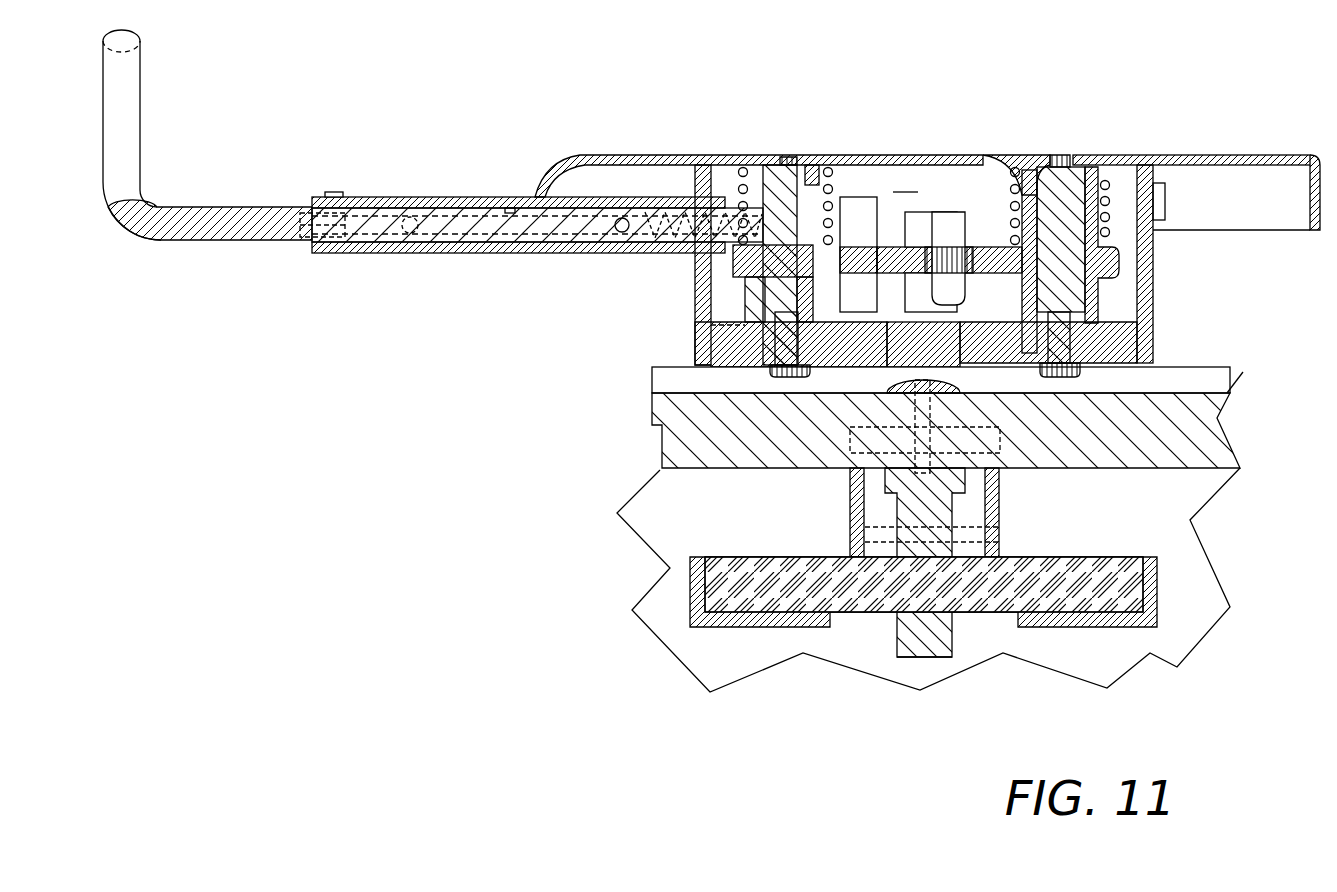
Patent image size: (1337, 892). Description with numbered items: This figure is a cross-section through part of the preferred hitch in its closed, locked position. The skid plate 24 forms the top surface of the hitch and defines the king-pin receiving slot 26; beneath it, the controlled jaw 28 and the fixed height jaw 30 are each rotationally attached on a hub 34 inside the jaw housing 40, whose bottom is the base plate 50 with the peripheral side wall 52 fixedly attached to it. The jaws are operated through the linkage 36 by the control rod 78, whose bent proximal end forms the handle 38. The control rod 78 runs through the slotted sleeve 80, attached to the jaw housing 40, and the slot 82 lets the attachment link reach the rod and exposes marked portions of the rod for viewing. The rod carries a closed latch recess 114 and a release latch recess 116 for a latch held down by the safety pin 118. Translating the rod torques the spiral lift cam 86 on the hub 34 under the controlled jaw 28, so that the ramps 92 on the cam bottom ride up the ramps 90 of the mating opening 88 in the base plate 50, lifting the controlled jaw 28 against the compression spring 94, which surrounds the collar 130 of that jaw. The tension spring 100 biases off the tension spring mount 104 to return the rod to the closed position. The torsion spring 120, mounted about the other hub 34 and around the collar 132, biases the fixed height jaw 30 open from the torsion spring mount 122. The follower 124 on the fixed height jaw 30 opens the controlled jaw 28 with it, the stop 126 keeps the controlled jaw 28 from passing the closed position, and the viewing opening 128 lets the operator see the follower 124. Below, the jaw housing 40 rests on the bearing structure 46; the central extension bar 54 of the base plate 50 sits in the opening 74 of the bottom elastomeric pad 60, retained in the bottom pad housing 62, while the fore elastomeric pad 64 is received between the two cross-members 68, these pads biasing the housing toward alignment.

The skid plate 24 is at (548, 163).
The king-pin receiving slot 26 is at (905, 180).
The controlled jaw 28 is at (855, 240).
The fixed height jaw 30 is at (985, 240).
The hub 34 is at (1078, 290).
The linkage 36 is at (425, 322).
The handle 38 is at (112, 138).
The jaw housing 40 is at (625, 303).
The bearing structure 46 is at (690, 418).
The base plate 50 is at (1097, 360).
The peripheral side wall 52 is at (1147, 287).
The central extension bar 54 is at (912, 652).
The bottom elastomeric pad 60 is at (1073, 557).
The bottom pad housing 62 is at (735, 612).
The fore elastomeric pad 64 is at (870, 518).
The cross-members 68 is at (850, 507).
The opening of the bottom elastomeric pad 74 is at (913, 612).
The control rod 78 is at (225, 237).
The slotted sleeve 80 is at (420, 255).
The slot 82 is at (500, 283).
The spiral lift cam 86 is at (748, 300).
The mating opening 88 is at (757, 338).
The ramps 90 is at (730, 328).
The ramps 92 is at (767, 340).
The compression spring 94 is at (813, 160).
The tension spring 100 is at (655, 200).
The tension spring mount 104 is at (838, 205).
The closed latch recess 114 is at (335, 197).
The release latch recess 116 is at (507, 208).
The safety pin 118 is at (297, 207).
The torsion spring 120 is at (1100, 170).
The torsion spring mount 122 is at (1165, 185).
The follower 124 is at (945, 212).
The stop 126 is at (857, 195).
The viewing opening 128 is at (935, 212).
The collar 130 is at (740, 170).
The collar 132 is at (1090, 218).